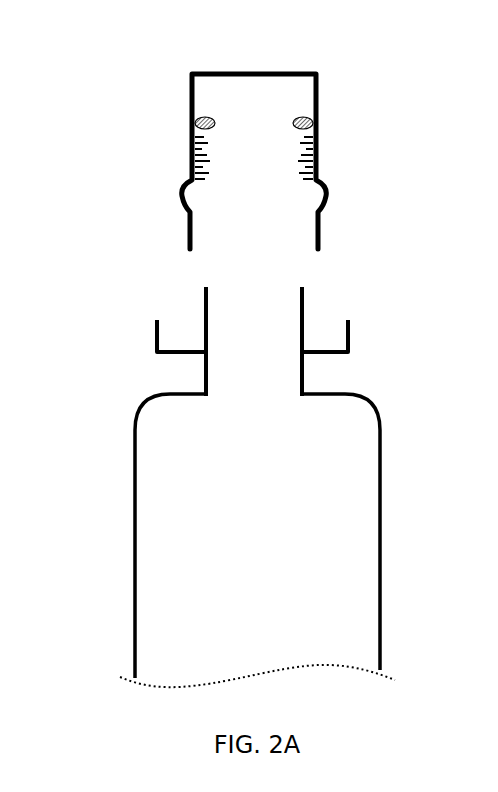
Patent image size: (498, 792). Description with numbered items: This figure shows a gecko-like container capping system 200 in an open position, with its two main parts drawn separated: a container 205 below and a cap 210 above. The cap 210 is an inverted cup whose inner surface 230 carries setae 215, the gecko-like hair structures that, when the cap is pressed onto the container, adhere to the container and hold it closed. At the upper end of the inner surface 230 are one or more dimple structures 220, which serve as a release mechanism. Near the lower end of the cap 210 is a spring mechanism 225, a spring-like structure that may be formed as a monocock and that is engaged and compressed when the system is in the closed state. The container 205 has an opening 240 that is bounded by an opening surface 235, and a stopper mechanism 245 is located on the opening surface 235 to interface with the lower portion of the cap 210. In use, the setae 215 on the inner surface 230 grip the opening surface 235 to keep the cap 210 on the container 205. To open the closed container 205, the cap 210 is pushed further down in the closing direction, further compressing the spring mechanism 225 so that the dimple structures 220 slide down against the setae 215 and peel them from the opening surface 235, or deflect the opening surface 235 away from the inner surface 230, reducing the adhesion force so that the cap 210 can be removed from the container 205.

The gecko-like container capping system 200 is at (108, 200).
The container 205 is at (370, 405).
The cap 210 is at (275, 72).
The setae 215 is at (213, 161).
The dimple structures 220 is at (208, 118).
The spring mechanism 225 is at (325, 188).
The inner surface 230 is at (310, 110).
The opening surface 235 is at (304, 338).
The opening 240 is at (268, 288).
The stopper mechanism 245 is at (351, 330).